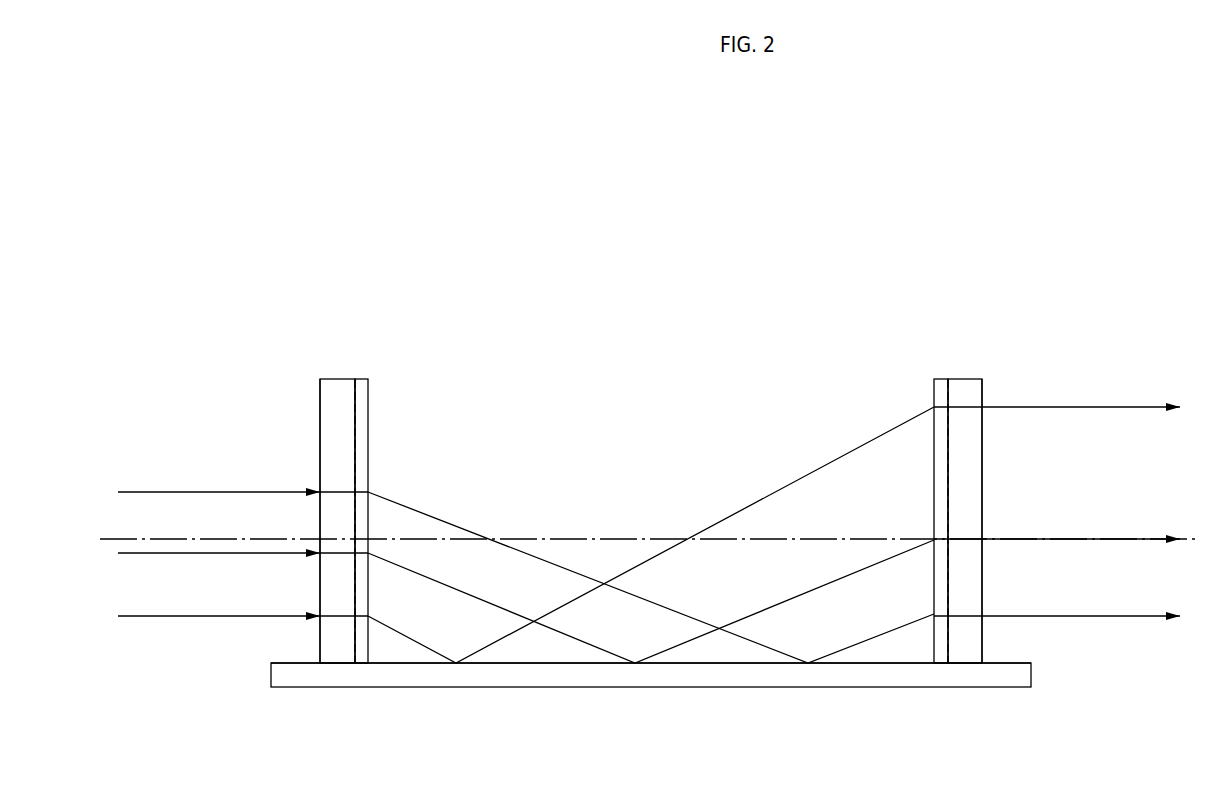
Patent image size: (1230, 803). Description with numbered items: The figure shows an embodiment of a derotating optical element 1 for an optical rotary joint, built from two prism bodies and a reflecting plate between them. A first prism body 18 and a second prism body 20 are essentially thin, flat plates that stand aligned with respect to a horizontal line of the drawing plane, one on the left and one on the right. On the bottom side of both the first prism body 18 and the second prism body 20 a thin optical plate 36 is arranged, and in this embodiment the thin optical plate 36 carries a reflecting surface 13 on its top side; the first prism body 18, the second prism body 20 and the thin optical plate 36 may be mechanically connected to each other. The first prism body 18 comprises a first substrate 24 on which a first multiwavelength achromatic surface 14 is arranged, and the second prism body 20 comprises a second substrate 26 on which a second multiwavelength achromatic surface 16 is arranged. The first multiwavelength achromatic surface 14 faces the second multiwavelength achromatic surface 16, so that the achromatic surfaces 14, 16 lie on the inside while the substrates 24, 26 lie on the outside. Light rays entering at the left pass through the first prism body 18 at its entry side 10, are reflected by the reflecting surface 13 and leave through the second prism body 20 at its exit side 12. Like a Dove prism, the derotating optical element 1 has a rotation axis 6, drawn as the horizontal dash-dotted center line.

The derotating optical element 1 is at (493, 293).
The rotation axis 6 is at (880, 538).
The light entry surface 10 is at (320, 641).
The light exit surface 12 is at (982, 572).
The reflecting surface 13 is at (556, 666).
The first multiwavelength achromatic surface 14 is at (359, 394).
The second multiwavelength achromatic surface 16 is at (942, 394).
The first prism body 18 is at (298, 369).
The second prism body 20 is at (1006, 369).
The first substrate 24 is at (332, 394).
The second substrate 26 is at (967, 394).
The thin optical plate 36 is at (743, 675).